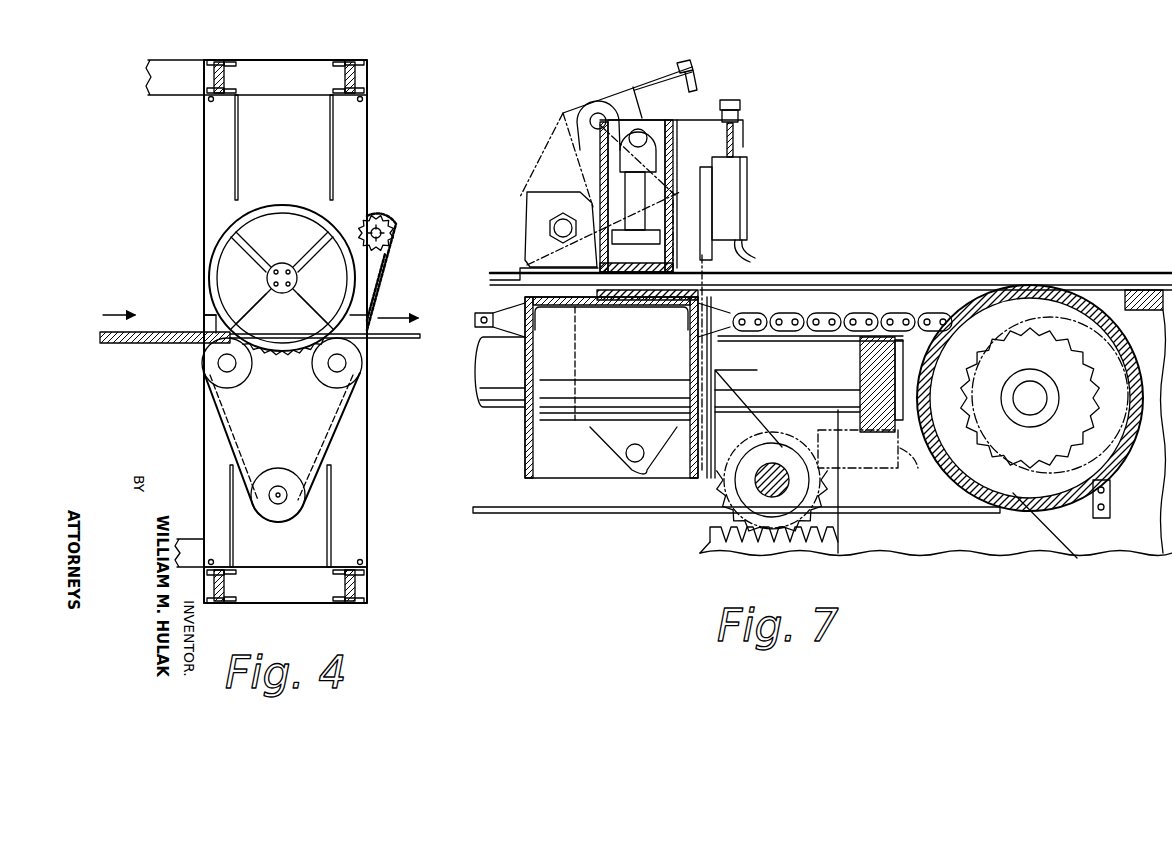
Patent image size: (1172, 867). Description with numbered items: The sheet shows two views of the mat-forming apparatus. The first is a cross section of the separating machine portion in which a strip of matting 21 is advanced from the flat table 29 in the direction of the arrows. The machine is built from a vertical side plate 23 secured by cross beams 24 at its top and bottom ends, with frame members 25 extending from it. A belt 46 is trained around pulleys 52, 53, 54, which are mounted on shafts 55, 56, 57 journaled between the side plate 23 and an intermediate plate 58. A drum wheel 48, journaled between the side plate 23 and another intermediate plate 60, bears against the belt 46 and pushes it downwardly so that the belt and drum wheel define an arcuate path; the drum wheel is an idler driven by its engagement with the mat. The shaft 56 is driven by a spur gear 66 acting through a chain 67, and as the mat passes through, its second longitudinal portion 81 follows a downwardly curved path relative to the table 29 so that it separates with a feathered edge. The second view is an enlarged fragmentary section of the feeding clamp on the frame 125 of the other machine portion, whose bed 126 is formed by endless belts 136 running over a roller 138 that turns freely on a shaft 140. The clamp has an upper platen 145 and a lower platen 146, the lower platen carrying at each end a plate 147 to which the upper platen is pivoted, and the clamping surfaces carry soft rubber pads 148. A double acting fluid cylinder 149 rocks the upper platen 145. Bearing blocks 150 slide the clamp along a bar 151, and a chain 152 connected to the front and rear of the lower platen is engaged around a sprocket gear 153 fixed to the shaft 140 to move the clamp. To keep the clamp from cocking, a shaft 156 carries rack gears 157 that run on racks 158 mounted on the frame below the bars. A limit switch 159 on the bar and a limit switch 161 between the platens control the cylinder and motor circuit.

In FIG. 4, the strip of matting 21 is at (172, 333).
In FIG. 7, the strip of matting 21 is at (958, 272).
In FIG. 4, the side plate 23 is at (205, 315).
In FIG. 4, the cross beams 24 is at (343, 63).
In FIG. 4, the frame members 25 is at (173, 65).
In FIG. 4, the flat table 29 is at (122, 345).
In FIG. 4, the belt 46 is at (238, 470).
In FIG. 4, the drum wheel 48 is at (254, 210).
In FIG. 4, the pulley 52 is at (280, 467).
In FIG. 4, the pulley 53 is at (323, 385).
In FIG. 4, the pulley 54 is at (235, 385).
In FIG. 4, the shaft 55 is at (281, 504).
In FIG. 4, the shaft 56 is at (346, 364).
In FIG. 4, the shaft 57 is at (213, 367).
In FIG. 4, the intermediate plate 58 is at (358, 468).
In FIG. 4, the intermediate plate 60 is at (215, 158).
In FIG. 4, the spur gear 66 is at (386, 213).
In FIG. 4, the chain 67 is at (391, 275).
In FIG. 4, the second longitudinal portion 81 is at (288, 347).
In FIG. 7, the frame 125 is at (1050, 536).
In FIG. 7, the bed 126 is at (858, 272).
In FIG. 7, the endless belts 136 is at (500, 280).
In FIG. 7, the roller 138 is at (985, 296).
In FIG. 7, the shaft 140 is at (1030, 388).
In FIG. 7, the upper platen 145 is at (600, 155).
In FIG. 7, the lower platen 146 is at (525, 366).
In FIG. 7, the plate 147 is at (525, 212).
In FIG. 7, the soft rubber pads 148 is at (690, 290).
In FIG. 7, the double acting fluid cylinder 149 is at (572, 398).
In FIG. 7, the bearing block 150 is at (860, 372).
In FIG. 7, the bar 151 is at (505, 410).
In FIG. 7, the chain 152 is at (484, 312).
In FIG. 7, the sprocket gear 153 is at (988, 452).
In FIG. 7, the shaft 156 is at (774, 478).
In FIG. 7, the rack gear 157 is at (722, 488).
In FIG. 7, the rack 158 is at (709, 545).
In FIG. 7, the limit switch 159 is at (848, 475).
In FIG. 7, the limit switch 161 is at (745, 178).